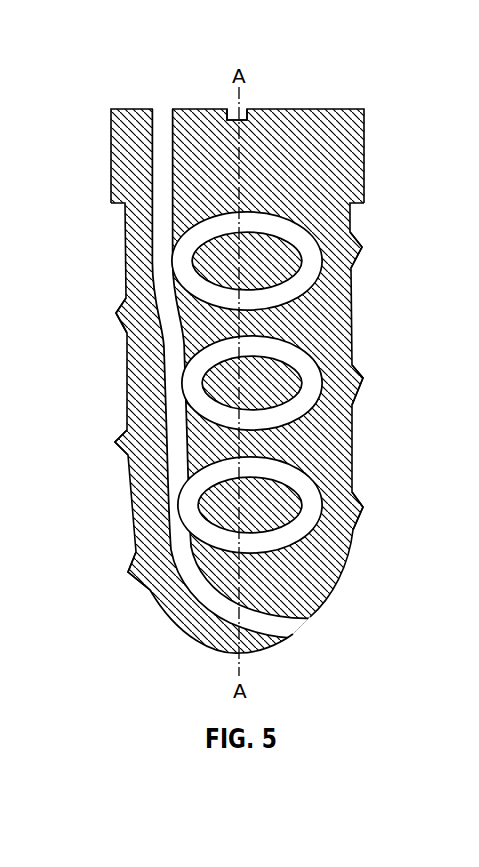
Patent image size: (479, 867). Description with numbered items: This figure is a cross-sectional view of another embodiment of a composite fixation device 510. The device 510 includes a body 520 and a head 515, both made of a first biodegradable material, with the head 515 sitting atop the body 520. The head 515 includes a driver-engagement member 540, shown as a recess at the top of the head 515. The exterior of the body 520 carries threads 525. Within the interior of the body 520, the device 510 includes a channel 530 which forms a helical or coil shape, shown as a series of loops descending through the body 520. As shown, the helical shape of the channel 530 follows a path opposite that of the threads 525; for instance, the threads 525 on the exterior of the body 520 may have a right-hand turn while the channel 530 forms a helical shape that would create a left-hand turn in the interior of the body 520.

The composite fixation device 510 is at (234, 357).
The head 515 is at (270, 140).
The body 520 is at (271, 428).
The threads 525 is at (363, 378).
The channel 530 is at (291, 623).
The driver-engagement member 540 is at (238, 117).